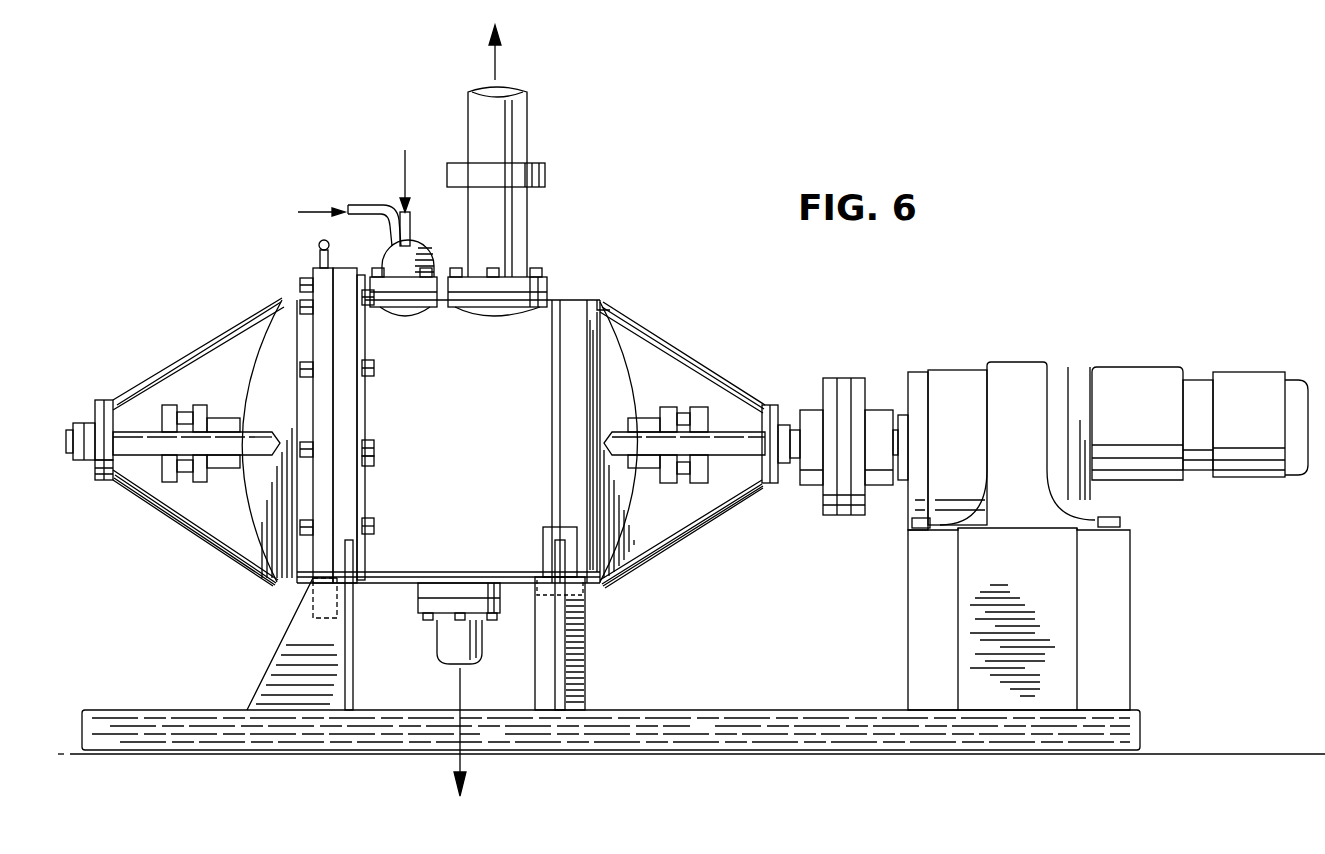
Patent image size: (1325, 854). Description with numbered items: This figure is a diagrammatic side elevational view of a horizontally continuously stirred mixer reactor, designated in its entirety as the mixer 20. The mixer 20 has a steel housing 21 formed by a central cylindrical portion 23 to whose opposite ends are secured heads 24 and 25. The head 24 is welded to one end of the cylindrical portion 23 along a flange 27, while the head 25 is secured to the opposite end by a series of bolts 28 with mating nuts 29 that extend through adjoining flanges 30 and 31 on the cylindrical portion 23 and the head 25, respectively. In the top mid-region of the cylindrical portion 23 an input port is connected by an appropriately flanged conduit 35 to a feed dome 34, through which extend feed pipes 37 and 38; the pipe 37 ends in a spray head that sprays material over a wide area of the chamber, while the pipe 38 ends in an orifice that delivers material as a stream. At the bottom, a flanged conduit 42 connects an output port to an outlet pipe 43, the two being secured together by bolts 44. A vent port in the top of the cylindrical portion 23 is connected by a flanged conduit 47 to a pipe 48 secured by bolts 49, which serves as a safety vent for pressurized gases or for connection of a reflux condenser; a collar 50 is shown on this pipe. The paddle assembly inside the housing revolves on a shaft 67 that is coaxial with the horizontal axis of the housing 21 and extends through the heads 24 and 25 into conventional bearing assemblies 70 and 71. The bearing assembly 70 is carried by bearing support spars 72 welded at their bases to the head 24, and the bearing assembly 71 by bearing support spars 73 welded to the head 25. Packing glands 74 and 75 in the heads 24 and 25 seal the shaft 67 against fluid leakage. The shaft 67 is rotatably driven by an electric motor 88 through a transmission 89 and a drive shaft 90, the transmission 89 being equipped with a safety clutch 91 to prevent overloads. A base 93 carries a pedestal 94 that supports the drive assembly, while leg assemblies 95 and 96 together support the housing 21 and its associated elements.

The mixer 20 is at (686, 326).
The housing 21 is at (522, 353).
The central cylindrical portion 23 is at (474, 452).
The head 24 is at (623, 490).
The head 25 is at (256, 384).
The flange 27 is at (562, 388).
The bolts 28 is at (374, 447).
The nuts 29 is at (374, 522).
The flange 30 is at (345, 338).
The flange 31 is at (322, 330).
The feed dome 34 is at (422, 256).
The flanged conduit 35 is at (407, 302).
The feed pipe 37 is at (412, 226).
The feed pipe 38 is at (368, 210).
The flanged conduit 42 is at (456, 590).
The outlet pipe 43 is at (447, 647).
The bolts 44 is at (428, 620).
The flanged conduit 47 is at (490, 305).
The pipe 48 is at (515, 230).
The bolts 49 is at (535, 277).
The collar 50 is at (548, 178).
The shaft 67 is at (84, 424).
The bearing assembly 70 is at (770, 490).
The bearing assembly 71 is at (98, 482).
The bearing support spars 72 is at (730, 440).
The bearing support spars 73 is at (143, 435).
The packing gland 74 is at (647, 422).
The packing gland 75 is at (229, 470).
The electric motor 88 is at (1133, 393).
The transmission 89 is at (1014, 380).
The drive shaft 90 is at (900, 415).
The safety clutch 91 is at (852, 380).
The base 93 is at (735, 722).
The pedestal 94 is at (1105, 632).
The leg assembly 95 is at (587, 648).
The leg assembly 96 is at (292, 658).